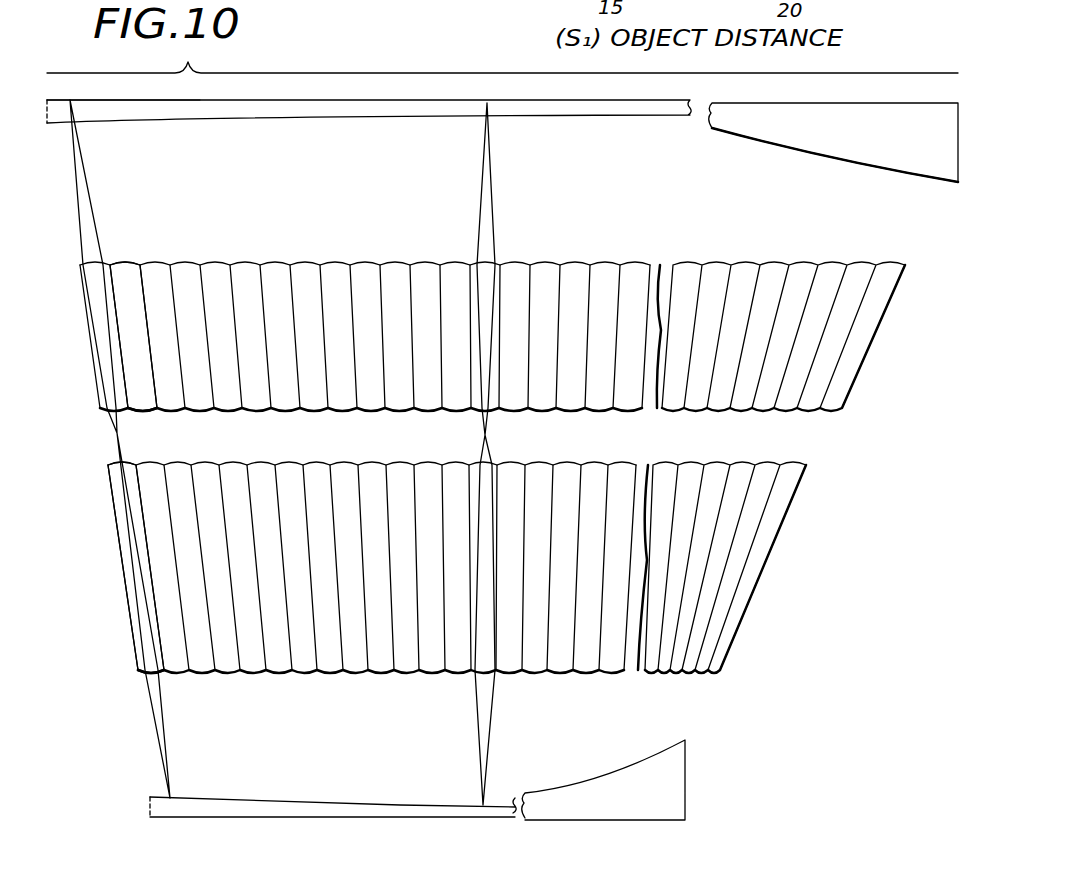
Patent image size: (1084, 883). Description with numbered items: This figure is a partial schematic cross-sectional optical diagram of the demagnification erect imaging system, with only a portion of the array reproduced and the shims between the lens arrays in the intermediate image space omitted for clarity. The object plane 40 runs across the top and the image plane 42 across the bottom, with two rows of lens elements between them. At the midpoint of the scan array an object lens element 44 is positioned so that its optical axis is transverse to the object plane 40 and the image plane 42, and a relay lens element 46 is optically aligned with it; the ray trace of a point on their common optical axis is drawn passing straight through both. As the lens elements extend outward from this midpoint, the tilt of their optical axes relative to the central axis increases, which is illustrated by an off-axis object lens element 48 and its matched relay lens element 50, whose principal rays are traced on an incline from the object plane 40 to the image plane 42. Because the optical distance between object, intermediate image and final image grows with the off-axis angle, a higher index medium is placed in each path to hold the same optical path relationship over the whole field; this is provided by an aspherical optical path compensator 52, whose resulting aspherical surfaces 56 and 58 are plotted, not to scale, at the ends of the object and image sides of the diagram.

The object plane 40 is at (468, 99).
The image plane 42 is at (164, 817).
The object lens element 44 is at (503, 286).
The relay lens element 46 is at (500, 655).
The object lens element 48 is at (128, 290).
The relay lens element 50 is at (127, 602).
The aspherical optical path compensator 52 is at (118, 100).
The aspherical surface 56 is at (862, 150).
The aspherical surface 58 is at (597, 780).